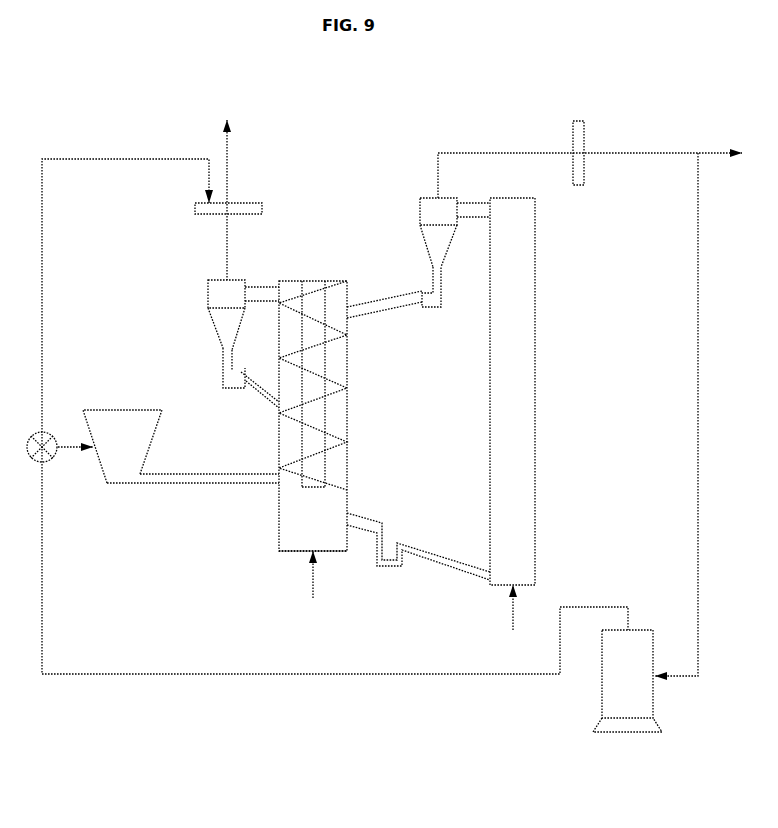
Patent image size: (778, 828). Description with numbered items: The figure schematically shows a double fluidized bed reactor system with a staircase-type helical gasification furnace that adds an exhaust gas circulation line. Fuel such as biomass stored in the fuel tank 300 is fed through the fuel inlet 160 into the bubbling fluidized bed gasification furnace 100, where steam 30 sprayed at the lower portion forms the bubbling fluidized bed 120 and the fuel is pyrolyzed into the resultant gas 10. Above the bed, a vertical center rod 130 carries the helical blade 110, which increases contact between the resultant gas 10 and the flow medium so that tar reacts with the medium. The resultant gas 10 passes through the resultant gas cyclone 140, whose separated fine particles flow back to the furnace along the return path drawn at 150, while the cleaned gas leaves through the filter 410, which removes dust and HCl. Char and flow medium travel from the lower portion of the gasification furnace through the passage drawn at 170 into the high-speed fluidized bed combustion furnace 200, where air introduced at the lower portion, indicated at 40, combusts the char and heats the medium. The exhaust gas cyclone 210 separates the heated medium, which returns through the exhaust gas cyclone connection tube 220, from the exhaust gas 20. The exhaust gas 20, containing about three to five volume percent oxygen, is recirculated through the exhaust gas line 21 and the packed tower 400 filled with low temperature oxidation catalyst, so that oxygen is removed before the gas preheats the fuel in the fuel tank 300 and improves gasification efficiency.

The resultant gas 10 is at (227, 187).
The exhaust gas 20 is at (508, 151).
The exhaust gas line 21 is at (302, 677).
The steam 30 is at (313, 584).
The air supply 40 is at (513, 619).
The bubbling fluidized bed gasification furnace 100 is at (349, 352).
The helical blade 110 is at (349, 387).
The bubbling fluidized bed 120 is at (290, 526).
The center rod 130 is at (330, 415).
The resultant gas cyclone 140 is at (215, 333).
The dipleg return pipe 150 is at (224, 372).
The fuel inlet 160 is at (213, 473).
The discharge pipe 170 is at (445, 556).
The high-speed fluidized bed combustion furnace 200 is at (537, 388).
The exhaust gas cyclone 210 is at (428, 250).
The exhaust gas cyclone connection tube 220 is at (445, 283).
The fuel tank 300 is at (97, 468).
The packed tower 400 is at (630, 733).
The filter 410 is at (263, 208).